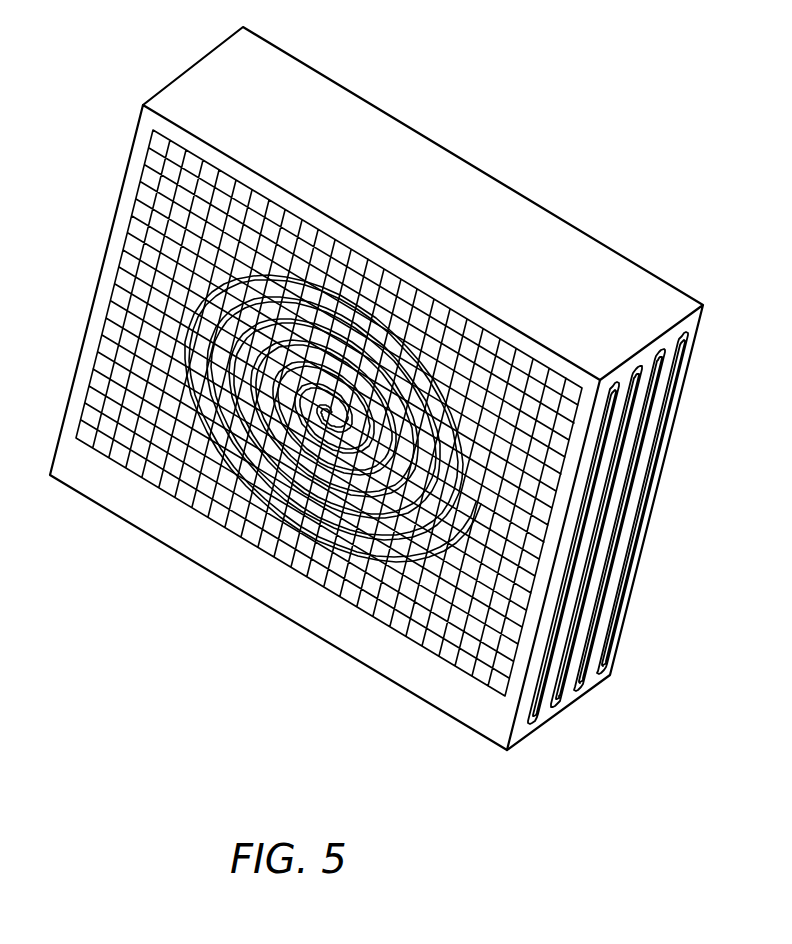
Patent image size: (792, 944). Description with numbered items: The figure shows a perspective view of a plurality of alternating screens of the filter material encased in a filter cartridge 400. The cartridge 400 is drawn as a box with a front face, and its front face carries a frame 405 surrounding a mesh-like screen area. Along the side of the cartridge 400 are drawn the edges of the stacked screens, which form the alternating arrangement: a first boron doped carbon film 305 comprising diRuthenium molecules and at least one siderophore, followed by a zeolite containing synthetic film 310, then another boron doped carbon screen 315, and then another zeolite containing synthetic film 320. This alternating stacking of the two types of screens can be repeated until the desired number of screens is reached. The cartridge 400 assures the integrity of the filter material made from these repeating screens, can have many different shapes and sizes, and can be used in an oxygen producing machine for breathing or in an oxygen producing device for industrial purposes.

The filter cartridge 400 is at (660, 485).
The frame 405 is at (277, 583).
The first boron doped carbon film 305 is at (535, 728).
The zeolite containing synthetic film 310 is at (558, 705).
The boron doped carbon screen 315 is at (583, 672).
The zeolite containing synthetic film 320 is at (610, 652).